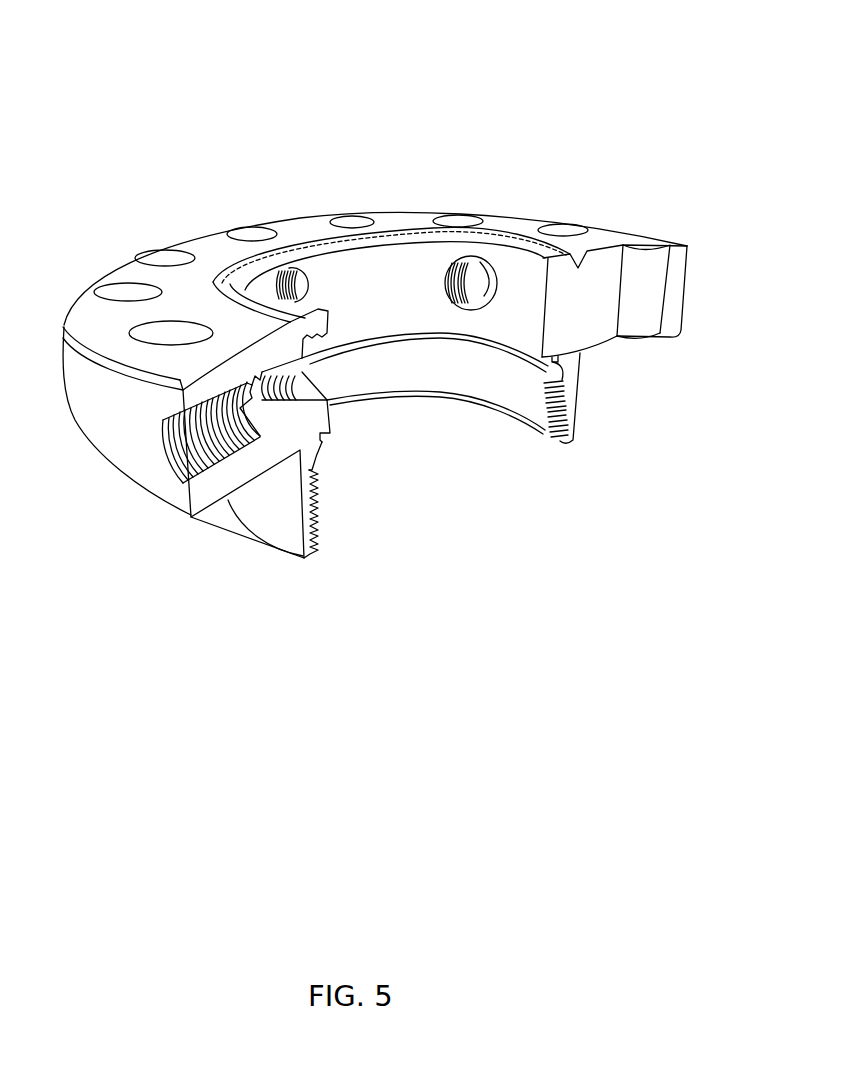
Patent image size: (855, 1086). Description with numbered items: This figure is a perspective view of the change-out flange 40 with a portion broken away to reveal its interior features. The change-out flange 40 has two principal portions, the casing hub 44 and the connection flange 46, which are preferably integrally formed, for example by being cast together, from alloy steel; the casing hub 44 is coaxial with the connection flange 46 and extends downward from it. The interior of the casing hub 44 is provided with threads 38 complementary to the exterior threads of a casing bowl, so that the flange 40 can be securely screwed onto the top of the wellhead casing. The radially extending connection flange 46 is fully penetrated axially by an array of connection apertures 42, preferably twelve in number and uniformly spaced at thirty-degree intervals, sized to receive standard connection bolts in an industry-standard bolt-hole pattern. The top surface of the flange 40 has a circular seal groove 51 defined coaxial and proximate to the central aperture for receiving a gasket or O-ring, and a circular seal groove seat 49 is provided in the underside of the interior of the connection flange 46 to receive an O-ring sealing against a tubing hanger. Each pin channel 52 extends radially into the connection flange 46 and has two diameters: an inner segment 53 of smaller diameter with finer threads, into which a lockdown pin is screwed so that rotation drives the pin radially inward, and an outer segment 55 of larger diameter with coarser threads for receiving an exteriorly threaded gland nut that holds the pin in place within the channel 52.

The change-out flange 40 is at (252, 104).
The connection apertures 42 is at (120, 290).
The casing hub 44 is at (280, 508).
The connection flange 46 is at (396, 277).
The seal groove seat 49 is at (566, 349).
The seal groove 51 is at (218, 275).
The pin channel 52 is at (290, 277).
The inner segment 53 is at (332, 400).
The outer segment 55 is at (185, 488).
The threads 38 is at (550, 430).